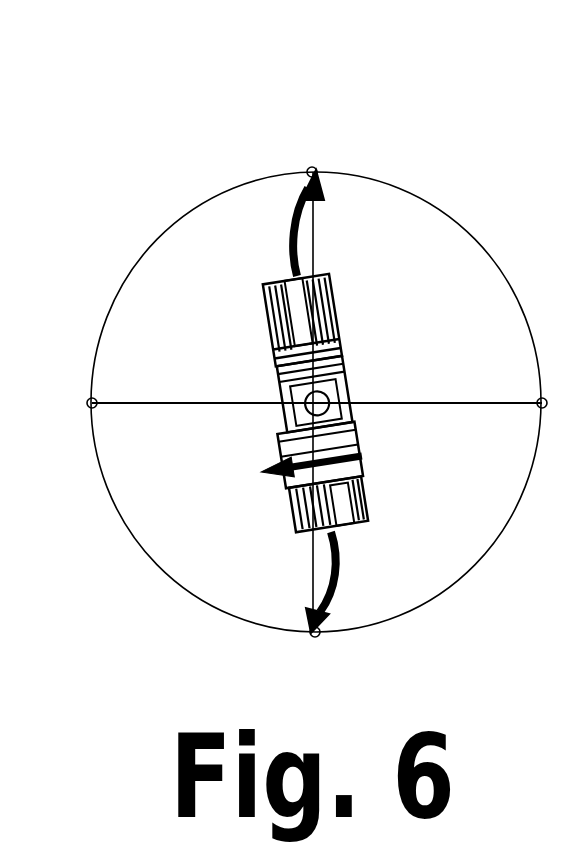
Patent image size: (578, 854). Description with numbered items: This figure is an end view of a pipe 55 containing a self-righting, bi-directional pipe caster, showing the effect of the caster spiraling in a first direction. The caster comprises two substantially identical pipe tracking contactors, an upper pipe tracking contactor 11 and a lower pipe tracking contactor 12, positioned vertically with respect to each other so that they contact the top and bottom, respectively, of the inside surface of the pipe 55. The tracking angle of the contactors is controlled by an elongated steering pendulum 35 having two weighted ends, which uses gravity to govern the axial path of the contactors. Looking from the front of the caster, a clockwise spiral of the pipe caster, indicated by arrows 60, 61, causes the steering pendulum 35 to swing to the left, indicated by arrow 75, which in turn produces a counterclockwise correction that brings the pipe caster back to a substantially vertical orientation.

The pipe 55 is at (420, 193).
The arrow 60 is at (293, 240).
The arrow 61 is at (342, 568).
The upper pipe tracking contactor 11 is at (333, 313).
The lower pipe tracking contactor 12 is at (367, 497).
The elongated steering pendulum 35 is at (367, 443).
The arrow 75 is at (270, 485).